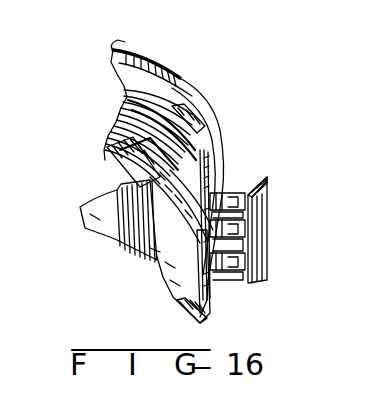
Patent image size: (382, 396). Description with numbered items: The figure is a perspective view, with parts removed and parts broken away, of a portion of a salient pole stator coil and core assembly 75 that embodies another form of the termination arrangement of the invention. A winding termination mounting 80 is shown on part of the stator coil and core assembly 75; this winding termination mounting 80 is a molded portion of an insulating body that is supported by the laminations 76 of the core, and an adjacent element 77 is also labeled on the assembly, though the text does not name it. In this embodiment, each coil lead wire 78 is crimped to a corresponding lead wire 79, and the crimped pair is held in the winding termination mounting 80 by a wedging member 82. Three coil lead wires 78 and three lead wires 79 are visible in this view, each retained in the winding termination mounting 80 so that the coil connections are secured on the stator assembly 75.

The salient pole stator coil and core assembly 75 is at (191, 174).
The laminations 76 is at (132, 46).
The mounting bar 77 is at (188, 116).
The coil lead wire 78 is at (227, 193).
The lead wire 79 is at (230, 203).
The winding termination mounting 80 is at (268, 172).
The wedging member 82 is at (284, 212).